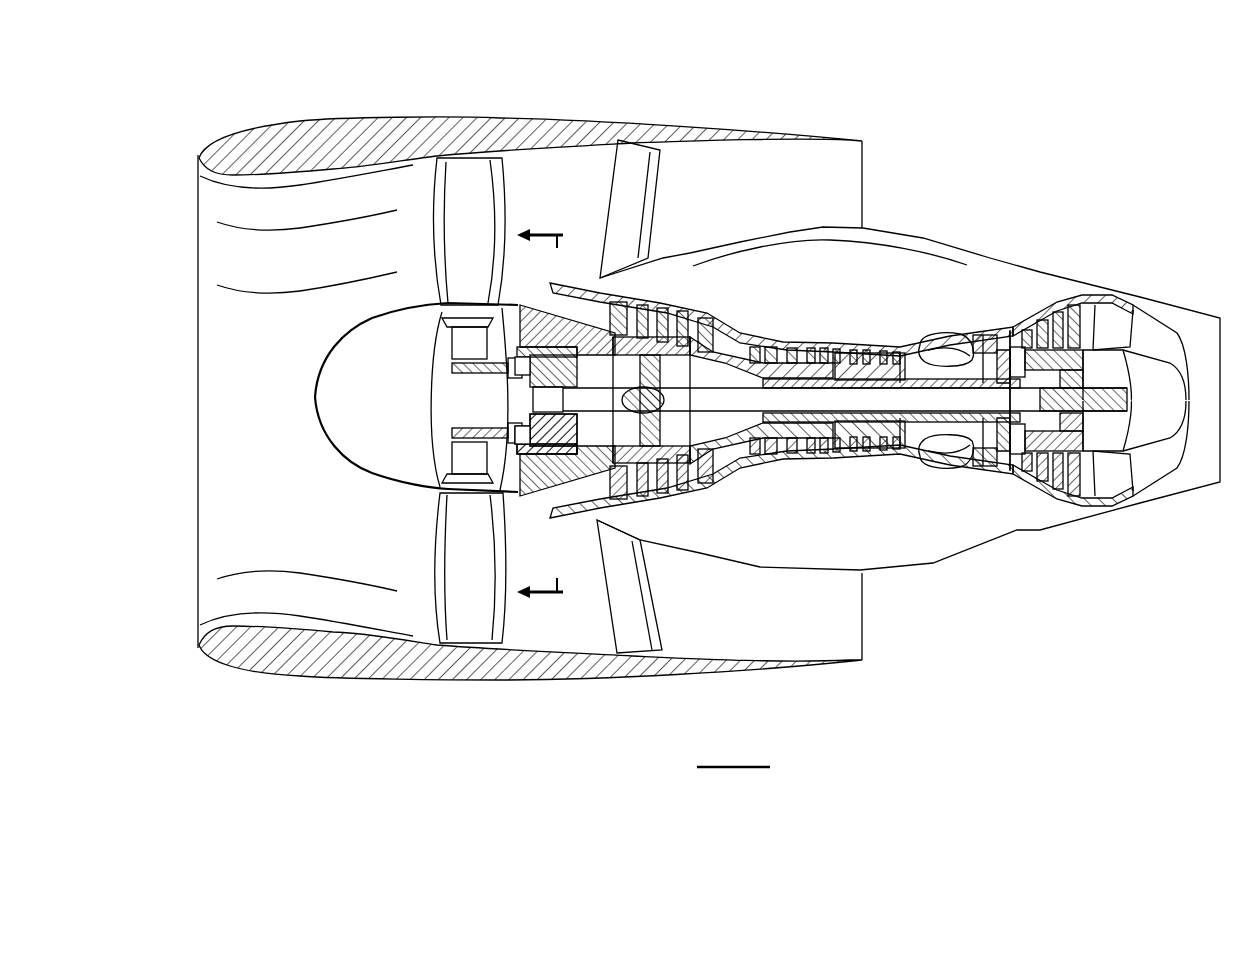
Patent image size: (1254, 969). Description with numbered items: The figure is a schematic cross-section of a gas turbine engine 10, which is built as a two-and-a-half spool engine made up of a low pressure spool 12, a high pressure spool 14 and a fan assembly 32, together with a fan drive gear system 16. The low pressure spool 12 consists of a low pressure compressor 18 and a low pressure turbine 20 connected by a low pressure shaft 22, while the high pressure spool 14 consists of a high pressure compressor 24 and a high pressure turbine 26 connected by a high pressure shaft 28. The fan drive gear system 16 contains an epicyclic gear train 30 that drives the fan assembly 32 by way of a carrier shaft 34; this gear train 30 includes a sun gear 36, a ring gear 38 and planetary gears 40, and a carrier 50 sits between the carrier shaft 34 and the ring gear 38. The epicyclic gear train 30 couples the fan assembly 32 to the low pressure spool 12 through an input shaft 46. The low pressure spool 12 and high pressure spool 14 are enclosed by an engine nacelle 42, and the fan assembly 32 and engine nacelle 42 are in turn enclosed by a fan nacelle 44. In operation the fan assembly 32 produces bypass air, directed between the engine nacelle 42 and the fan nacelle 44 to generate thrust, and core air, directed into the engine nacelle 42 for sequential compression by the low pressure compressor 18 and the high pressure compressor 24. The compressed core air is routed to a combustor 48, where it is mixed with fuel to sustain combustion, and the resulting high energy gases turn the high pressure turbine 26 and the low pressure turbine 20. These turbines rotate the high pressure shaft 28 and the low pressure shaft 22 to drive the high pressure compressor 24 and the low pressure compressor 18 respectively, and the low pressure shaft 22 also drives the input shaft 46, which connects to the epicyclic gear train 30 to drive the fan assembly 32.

The gas turbine engine 10 is at (748, 90).
The low pressure spool 12 is at (735, 428).
The high pressure spool 14 is at (946, 423).
The fan drive gear system 16 is at (519, 397).
The low pressure compressor 18 is at (667, 296).
The low pressure turbine 20 is at (1057, 290).
The low pressure shaft 22 is at (877, 340).
The high pressure compressor 24 is at (793, 348).
The high pressure turbine 26 is at (992, 316).
The high pressure shaft 28 is at (905, 425).
The epicyclic gear train 30 is at (528, 410).
The fan assembly 32 is at (455, 250).
The carrier shaft 34 is at (515, 437).
The sun gear 36 is at (565, 470).
The ring gear 38 is at (543, 350).
The planetary gears 40 is at (540, 425).
The engine nacelle 42 is at (930, 557).
The fan nacelle 44 is at (570, 680).
The input shaft 46 is at (648, 470).
The combustor 48 is at (941, 318).
The carrier 50 is at (513, 440).